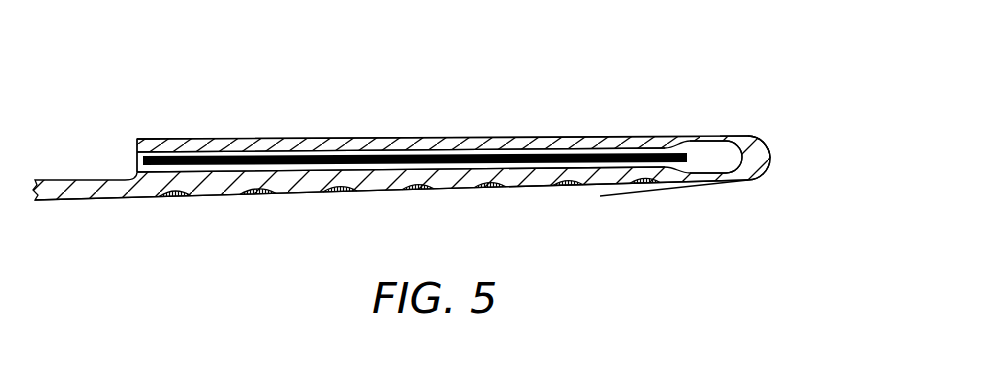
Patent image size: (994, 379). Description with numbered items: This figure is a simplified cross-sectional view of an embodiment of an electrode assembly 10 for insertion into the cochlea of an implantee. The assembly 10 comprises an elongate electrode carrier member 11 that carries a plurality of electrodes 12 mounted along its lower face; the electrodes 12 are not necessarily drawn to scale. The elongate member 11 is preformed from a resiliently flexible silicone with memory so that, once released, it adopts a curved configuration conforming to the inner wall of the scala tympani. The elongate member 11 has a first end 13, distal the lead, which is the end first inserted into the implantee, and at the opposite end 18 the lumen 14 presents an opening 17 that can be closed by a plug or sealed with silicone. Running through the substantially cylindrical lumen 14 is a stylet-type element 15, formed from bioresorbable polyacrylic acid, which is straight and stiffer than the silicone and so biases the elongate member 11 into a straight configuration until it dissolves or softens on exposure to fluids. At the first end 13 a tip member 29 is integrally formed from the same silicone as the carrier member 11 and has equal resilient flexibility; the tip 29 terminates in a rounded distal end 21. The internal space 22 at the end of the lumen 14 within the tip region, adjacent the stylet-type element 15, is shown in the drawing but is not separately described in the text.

The assembly 10 is at (401, 109).
The elongate electrode carrier member 11 is at (380, 186).
The electrodes 12 is at (258, 199).
The first end 13 is at (728, 193).
The lumen 14 is at (398, 139).
The stylet-type element 15 is at (298, 155).
The opening 17 is at (137, 155).
The end 18 is at (145, 139).
The distal end 21 is at (772, 158).
The cavity 22 is at (704, 155).
The tip member 29 is at (763, 137).